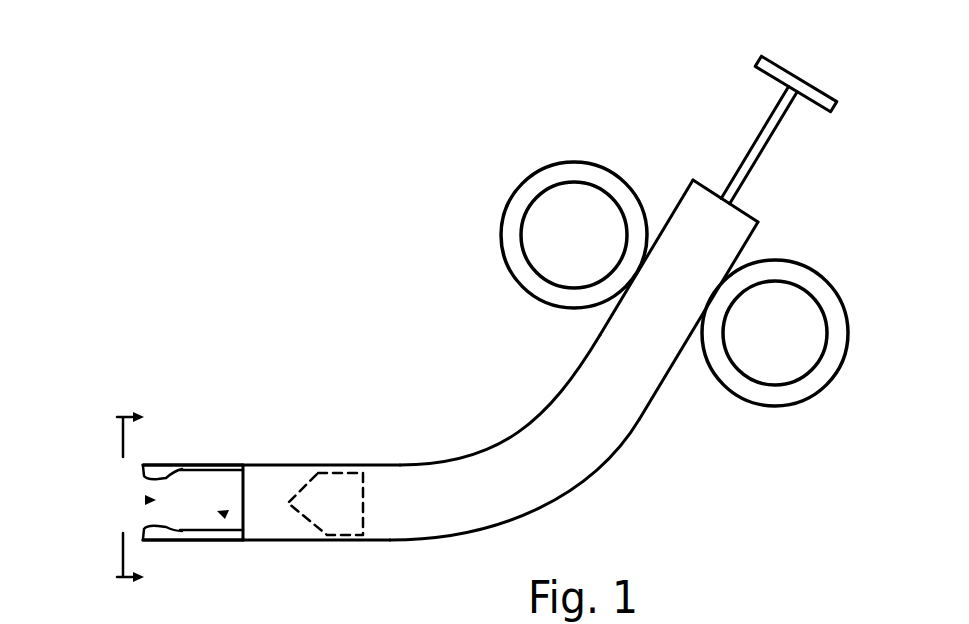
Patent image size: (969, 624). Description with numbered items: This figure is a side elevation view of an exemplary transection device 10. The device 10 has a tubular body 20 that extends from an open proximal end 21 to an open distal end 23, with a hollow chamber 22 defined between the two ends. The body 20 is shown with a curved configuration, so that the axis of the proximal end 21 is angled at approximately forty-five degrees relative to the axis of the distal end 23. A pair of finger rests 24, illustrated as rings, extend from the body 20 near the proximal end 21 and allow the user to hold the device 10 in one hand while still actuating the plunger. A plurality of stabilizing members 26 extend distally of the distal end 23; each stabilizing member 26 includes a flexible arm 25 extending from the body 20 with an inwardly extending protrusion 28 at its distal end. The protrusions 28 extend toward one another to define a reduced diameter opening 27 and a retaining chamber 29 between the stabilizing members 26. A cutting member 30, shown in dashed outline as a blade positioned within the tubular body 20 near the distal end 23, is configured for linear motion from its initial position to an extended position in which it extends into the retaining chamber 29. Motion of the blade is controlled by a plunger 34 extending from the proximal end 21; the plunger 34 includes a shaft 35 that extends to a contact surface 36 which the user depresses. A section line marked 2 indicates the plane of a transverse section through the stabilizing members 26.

The section line 2- 2 is at (130, 503).
The transection device 10 is at (394, 284).
The tubular body 20 is at (520, 437).
The proximal end 21 is at (745, 211).
The hollow chamber 22 is at (597, 415).
The distal end 23 is at (245, 465).
The finger rests 24 is at (547, 176).
The flexible arm 25 is at (210, 465).
The stabilizing members 26 is at (176, 467).
The reduced diameter opening 27 is at (148, 500).
The protrusion 28 is at (140, 476).
The retaining chamber 29 is at (226, 514).
The cutting member 30 is at (345, 488).
The plunger 34 is at (784, 136).
The shaft 35 is at (747, 153).
The contact surface 36 is at (798, 78).